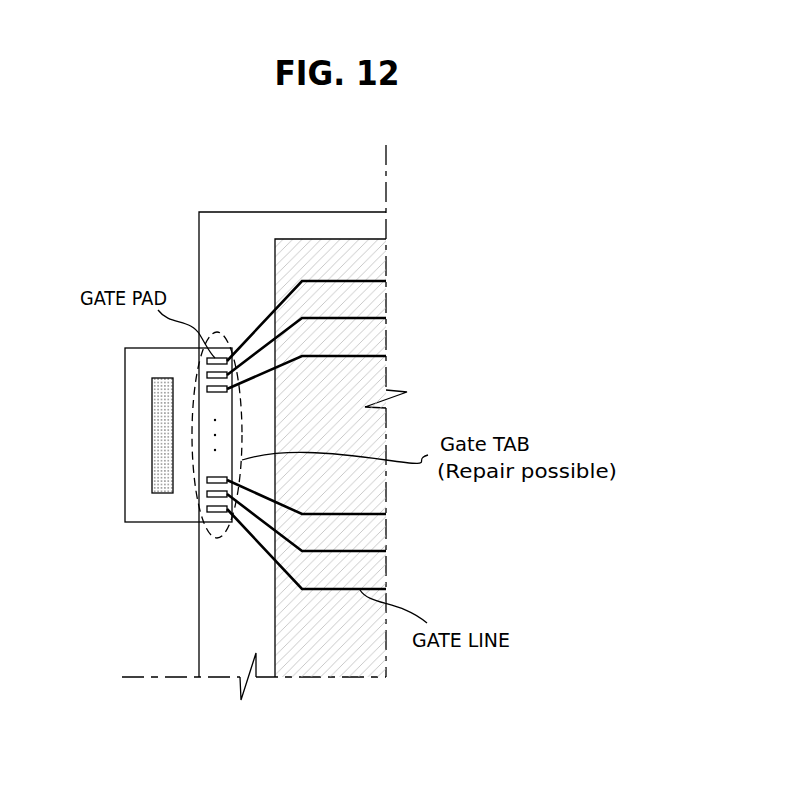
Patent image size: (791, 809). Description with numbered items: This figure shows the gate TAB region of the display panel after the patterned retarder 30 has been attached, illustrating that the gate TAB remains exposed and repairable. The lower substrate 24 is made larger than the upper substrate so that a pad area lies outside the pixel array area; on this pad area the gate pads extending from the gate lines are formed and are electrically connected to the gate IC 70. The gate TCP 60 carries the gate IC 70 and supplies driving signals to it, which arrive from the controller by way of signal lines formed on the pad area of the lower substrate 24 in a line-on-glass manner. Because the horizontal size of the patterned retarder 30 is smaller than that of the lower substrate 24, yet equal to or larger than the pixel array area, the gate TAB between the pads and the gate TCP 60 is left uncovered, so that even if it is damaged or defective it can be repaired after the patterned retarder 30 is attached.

The lower substrate 24 is at (293, 212).
The patterned retarder 30 is at (337, 239).
The gate TCP 60 is at (125, 393).
The gate IC 70 is at (152, 443).